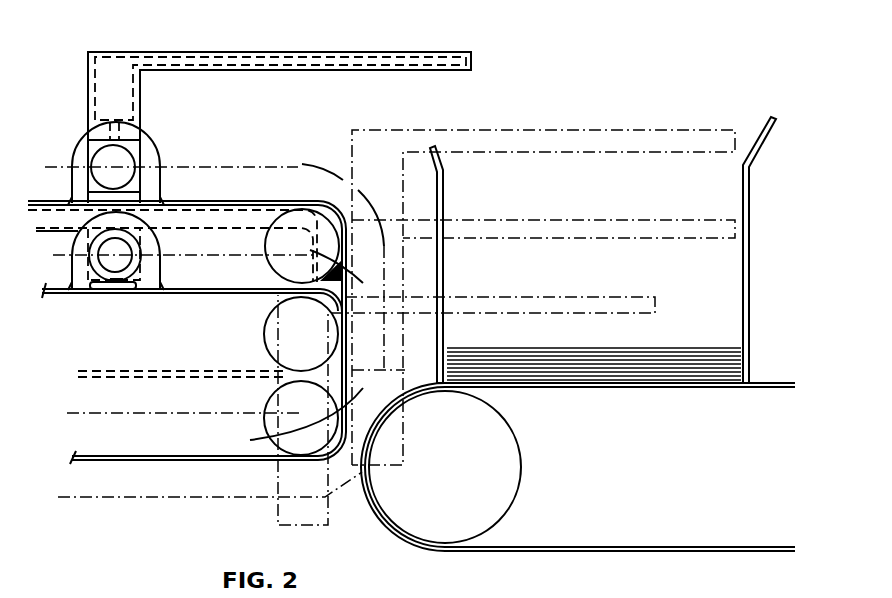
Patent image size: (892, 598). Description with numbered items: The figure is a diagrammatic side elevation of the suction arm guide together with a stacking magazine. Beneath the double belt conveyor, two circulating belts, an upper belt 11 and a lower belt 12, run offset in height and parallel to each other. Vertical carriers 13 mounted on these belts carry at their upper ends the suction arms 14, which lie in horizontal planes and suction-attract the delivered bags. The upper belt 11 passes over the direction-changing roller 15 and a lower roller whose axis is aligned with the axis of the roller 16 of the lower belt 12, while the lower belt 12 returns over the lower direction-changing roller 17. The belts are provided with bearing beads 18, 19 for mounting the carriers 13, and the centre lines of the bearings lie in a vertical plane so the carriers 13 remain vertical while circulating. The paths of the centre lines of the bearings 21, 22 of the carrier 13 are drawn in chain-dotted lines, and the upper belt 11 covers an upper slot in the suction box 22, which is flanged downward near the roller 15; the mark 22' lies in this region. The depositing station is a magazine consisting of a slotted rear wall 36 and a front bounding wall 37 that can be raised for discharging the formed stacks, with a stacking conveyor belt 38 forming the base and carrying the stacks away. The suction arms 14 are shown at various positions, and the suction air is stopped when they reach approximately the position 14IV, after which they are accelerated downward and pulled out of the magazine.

The upper belt 11 is at (219, 203).
The lower belt 12 is at (217, 293).
The vertical carrier 13 is at (90, 186).
The suction arm 14 is at (302, 54).
The suction arm position 14IV is at (549, 228).
The direction-changing roller 15 is at (297, 222).
The roller of the lower belt 16 is at (278, 342).
The lower direction-changing roller 17 is at (273, 430).
The bearing bead 18 is at (147, 148).
The bearing bead 19 is at (145, 278).
The bearing 21 is at (107, 157).
The bearing 22 is at (195, 293).
The sheet leading edge 22' is at (45, 252).
The rear wall 36 is at (440, 197).
The front bounding wall 37 is at (743, 189).
The stacking conveyor belt 38 is at (613, 380).